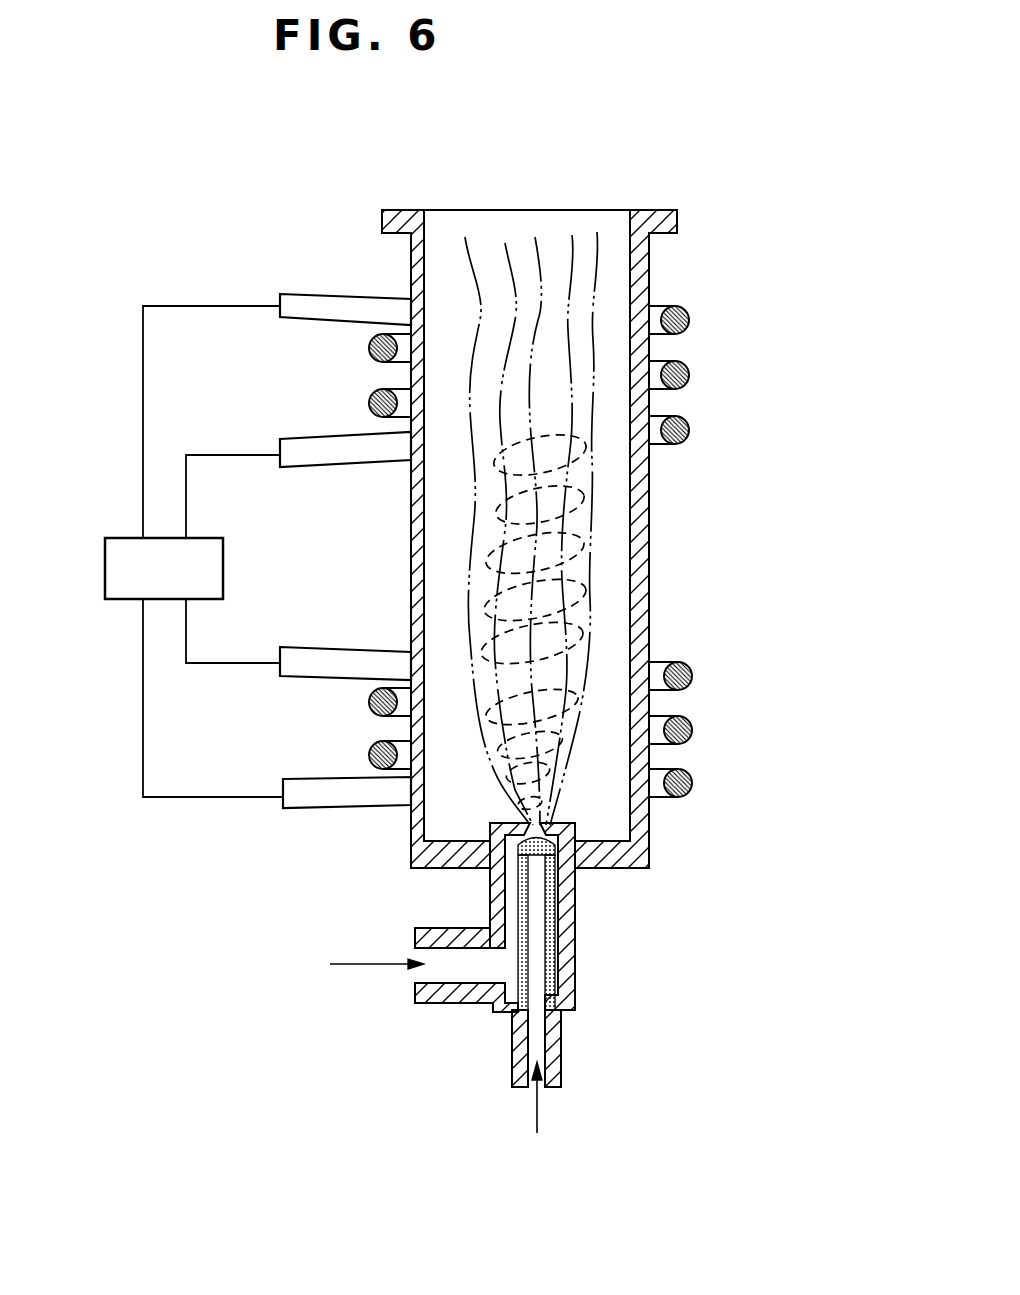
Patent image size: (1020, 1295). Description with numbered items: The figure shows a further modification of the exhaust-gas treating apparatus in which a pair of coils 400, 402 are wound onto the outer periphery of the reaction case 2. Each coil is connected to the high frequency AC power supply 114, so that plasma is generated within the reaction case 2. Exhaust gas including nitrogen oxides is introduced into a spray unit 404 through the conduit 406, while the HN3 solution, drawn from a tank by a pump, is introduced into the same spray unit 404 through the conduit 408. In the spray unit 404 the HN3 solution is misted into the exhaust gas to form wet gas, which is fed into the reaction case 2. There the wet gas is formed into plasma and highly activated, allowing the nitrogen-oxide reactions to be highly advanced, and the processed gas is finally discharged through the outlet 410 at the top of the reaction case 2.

The reaction case 2 is at (649, 277).
The outlet 410 is at (606, 211).
The coil 402 is at (688, 425).
The coil 400 is at (690, 676).
The high frequency AC power supply 114 is at (223, 553).
The spray unit 404 is at (575, 955).
The conduit 406 is at (455, 993).
The conduit 408 is at (561, 1045).